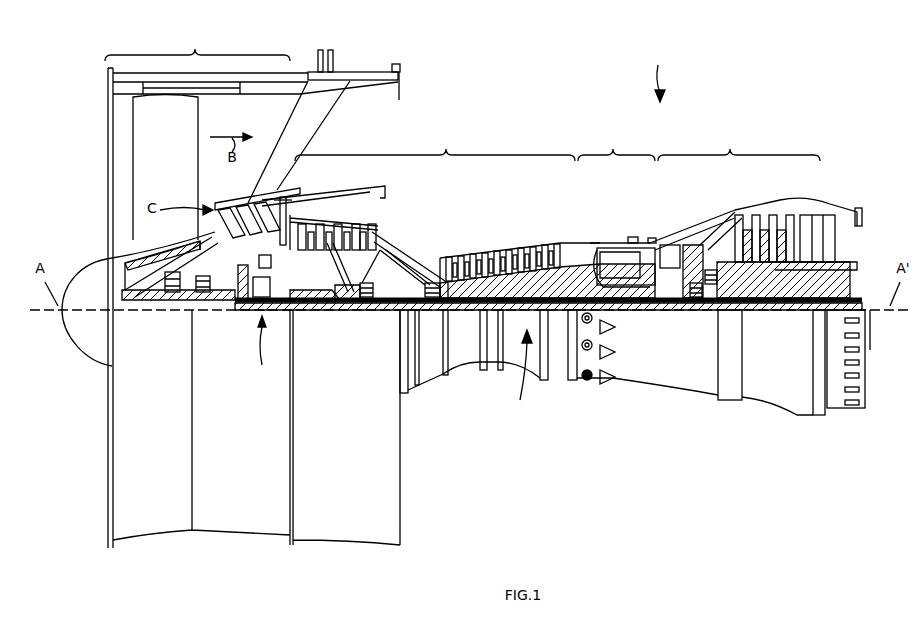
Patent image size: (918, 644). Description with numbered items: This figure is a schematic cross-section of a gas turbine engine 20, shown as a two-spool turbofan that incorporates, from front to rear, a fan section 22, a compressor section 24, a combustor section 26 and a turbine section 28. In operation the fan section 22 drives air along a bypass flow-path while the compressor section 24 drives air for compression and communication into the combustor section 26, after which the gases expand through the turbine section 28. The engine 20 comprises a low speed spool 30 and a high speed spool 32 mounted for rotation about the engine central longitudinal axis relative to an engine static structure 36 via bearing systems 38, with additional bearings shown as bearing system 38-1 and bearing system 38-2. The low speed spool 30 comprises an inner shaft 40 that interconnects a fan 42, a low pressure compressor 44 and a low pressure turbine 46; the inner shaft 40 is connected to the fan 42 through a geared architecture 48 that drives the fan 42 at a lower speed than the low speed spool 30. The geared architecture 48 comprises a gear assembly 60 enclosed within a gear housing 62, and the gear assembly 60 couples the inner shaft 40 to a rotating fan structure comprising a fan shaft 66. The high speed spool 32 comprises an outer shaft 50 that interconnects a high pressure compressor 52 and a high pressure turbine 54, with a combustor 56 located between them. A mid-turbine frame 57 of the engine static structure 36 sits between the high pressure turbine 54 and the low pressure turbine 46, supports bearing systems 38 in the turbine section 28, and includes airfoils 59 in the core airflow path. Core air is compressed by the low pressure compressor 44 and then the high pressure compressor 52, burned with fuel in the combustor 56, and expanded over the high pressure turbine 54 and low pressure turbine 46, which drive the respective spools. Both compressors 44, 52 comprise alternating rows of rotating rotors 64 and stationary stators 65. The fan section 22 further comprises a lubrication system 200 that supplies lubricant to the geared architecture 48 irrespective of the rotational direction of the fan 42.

The gas turbine engine 20 is at (658, 73).
The fan section 22 is at (197, 44).
The compressor section 24 is at (435, 144).
The combustor section 26 is at (616, 144).
The turbine section 28 is at (739, 144).
The low speed spool 30 is at (510, 363).
The high speed spool 32 is at (550, 285).
The engine static structure 36 is at (95, 550).
The bearing system 38 is at (700, 305).
The bearing system 38-1 is at (176, 303).
The bearing system 38-2 is at (366, 305).
The inner shaft 40 is at (426, 315).
The fan 42 is at (155, 169).
The low pressure compressor 44 is at (375, 234).
The low pressure turbine 46 is at (758, 225).
The geared architecture 48 is at (262, 348).
The outer shaft 50 is at (614, 303).
The high pressure compressor 52 is at (495, 250).
The high pressure turbine 54 is at (668, 245).
The combustor 56 is at (625, 262).
The mid-turbine frame 57 is at (692, 232).
The airfoils 59 is at (712, 240).
The gear assembly 60 is at (273, 295).
The gear housing 62 is at (272, 263).
The rotors 64 is at (308, 232).
The stators 65 is at (346, 232).
The fan shaft 66 is at (150, 305).
The lubrication system 200 is at (244, 307).